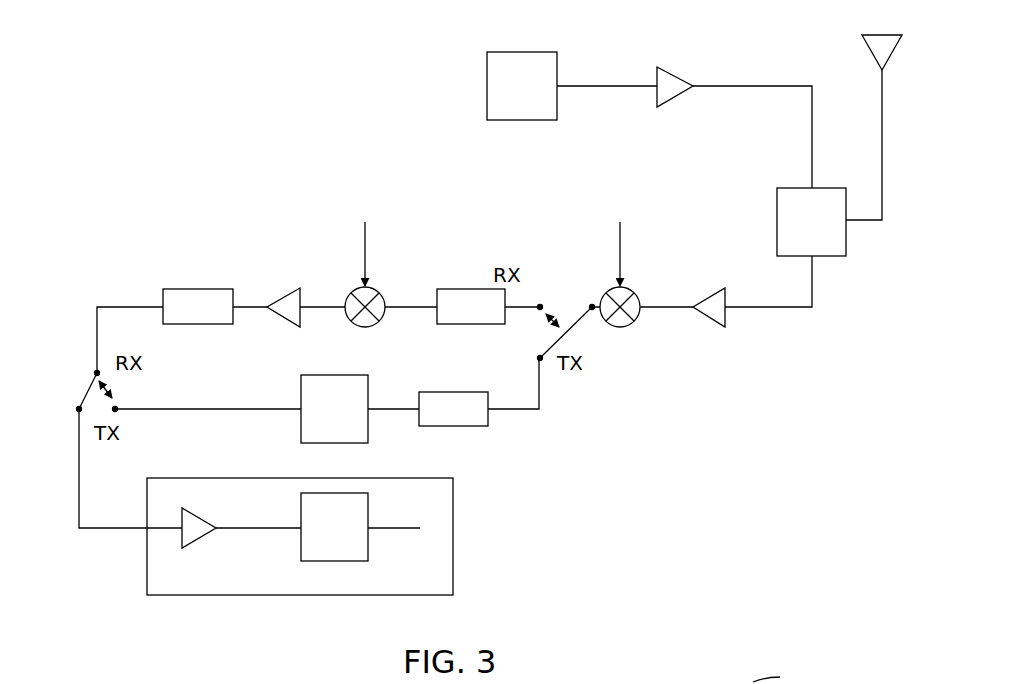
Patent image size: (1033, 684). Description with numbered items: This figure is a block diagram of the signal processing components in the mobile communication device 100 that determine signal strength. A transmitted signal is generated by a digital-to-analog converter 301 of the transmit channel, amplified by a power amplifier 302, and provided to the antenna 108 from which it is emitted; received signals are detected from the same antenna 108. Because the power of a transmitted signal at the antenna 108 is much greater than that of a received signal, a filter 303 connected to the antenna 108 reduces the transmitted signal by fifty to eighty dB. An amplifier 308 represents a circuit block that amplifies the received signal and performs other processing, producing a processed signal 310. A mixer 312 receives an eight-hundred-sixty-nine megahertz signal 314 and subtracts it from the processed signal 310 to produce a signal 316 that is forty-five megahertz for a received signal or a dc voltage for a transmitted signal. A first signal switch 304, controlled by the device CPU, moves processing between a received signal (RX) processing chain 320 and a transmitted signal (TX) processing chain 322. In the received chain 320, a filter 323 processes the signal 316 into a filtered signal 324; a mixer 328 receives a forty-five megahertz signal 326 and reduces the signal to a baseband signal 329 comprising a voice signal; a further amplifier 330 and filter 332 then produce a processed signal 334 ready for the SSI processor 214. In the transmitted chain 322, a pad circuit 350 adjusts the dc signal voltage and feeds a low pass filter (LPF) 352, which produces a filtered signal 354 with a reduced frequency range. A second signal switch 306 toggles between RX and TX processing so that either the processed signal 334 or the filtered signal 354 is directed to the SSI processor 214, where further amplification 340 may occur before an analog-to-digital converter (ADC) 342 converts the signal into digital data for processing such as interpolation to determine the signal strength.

The mobile communication device 100 is at (232, 167).
The antenna 108 is at (883, 35).
The SSI processor 214 is at (147, 582).
The digital-to-analog converter 301 is at (521, 52).
The power amplifier 302 is at (671, 66).
The filter 303 is at (871, 247).
The first signal switch 304 is at (563, 305).
The second signal switch 306 is at (84, 390).
The amplifier 308 is at (712, 323).
The processed signal 310 is at (657, 305).
The mixer 312 is at (636, 320).
The 869 MHz signal 314 is at (620, 229).
The signal 316 is at (577, 314).
The received signal (RX) processing chain 320 is at (471, 341).
The transmitted signal (TX) processing chain 322 is at (566, 401).
The filter 323 is at (470, 289).
The filtered signal 324 is at (407, 305).
The 45 MHz signal 326 is at (365, 232).
The mixer 328 is at (351, 291).
The baseband signal 329 is at (330, 311).
The amplifier 330 is at (284, 297).
The filter 332 is at (198, 289).
The processed signal 334 is at (96, 313).
The amplification 340 is at (208, 540).
The analog-to-digital converter (ADC) 342 is at (368, 545).
The pad circuit 350 is at (452, 426).
The low pass filter (LPF) 352 is at (301, 425).
The filtered signal 354 is at (172, 409).